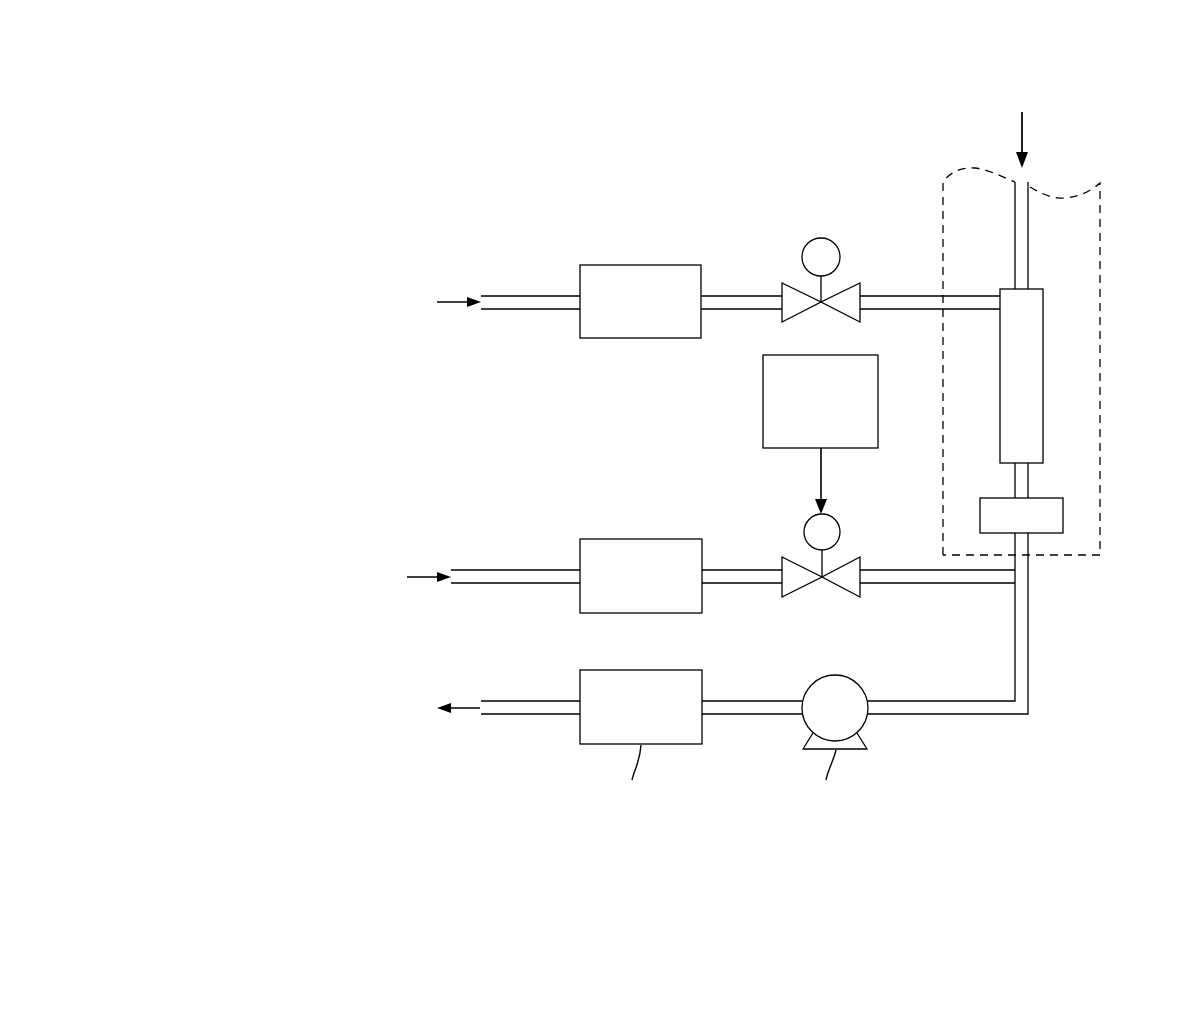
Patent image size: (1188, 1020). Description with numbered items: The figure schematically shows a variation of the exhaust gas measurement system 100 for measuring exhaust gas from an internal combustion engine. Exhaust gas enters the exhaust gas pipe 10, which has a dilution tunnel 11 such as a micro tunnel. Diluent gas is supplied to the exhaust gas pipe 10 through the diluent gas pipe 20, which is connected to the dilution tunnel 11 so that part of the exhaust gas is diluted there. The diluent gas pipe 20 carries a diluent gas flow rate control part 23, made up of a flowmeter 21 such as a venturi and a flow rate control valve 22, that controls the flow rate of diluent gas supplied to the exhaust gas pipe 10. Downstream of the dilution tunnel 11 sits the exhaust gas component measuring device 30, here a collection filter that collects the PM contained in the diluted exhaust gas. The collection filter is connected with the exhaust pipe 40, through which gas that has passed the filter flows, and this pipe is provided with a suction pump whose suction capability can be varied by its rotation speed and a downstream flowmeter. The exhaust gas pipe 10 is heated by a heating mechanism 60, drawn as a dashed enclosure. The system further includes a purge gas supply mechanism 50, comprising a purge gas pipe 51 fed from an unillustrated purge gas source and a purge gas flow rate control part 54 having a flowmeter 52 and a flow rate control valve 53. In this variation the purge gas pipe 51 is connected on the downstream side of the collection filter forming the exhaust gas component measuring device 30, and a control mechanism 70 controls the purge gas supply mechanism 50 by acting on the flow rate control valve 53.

The exhaust gas measurement system 100 is at (440, 208).
The exhaust gas pipe 10 is at (1030, 244).
The dilution tunnel 11 is at (1045, 376).
The diluent gas pipe 20 is at (541, 295).
The flowmeter 21 is at (641, 340).
The flow rate control valve 22 is at (821, 238).
The diluent gas flow rate control part 23 is at (606, 200).
The exhaust gas component measuring device 30 is at (1065, 518).
The exhaust pipe 40 is at (1001, 716).
The purge gas supply mechanism 50 is at (505, 484).
The purge gas pipe 51 is at (541, 569).
The flowmeter 52 is at (634, 538).
The flow rate control valve 53 is at (803, 532).
The purge gas flow rate control part 54 is at (602, 466).
The heating mechanism 60 is at (1100, 311).
The control mechanism 70 is at (763, 402).